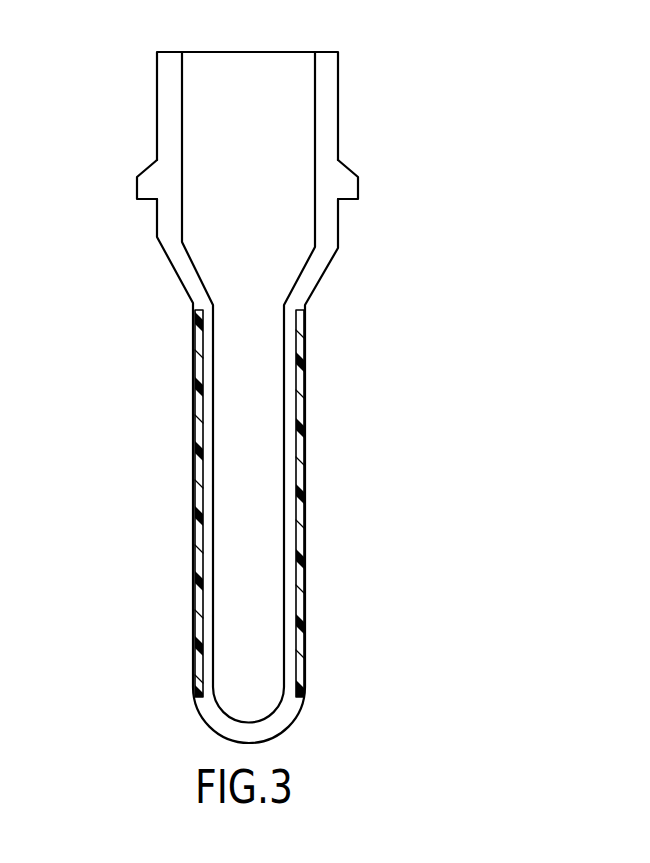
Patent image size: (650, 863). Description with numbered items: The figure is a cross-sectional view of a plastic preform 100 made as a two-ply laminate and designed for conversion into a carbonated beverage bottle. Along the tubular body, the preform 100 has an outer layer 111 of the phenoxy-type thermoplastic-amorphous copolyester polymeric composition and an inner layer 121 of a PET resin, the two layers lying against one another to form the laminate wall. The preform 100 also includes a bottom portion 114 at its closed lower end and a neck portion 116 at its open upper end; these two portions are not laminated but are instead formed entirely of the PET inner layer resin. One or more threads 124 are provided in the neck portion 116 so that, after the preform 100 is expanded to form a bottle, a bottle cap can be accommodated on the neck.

The plastic preform 100 is at (372, 82).
The threads 124 is at (353, 173).
The neck portion 116 is at (338, 233).
The inner layer 121 is at (293, 385).
The outer layer 111 is at (303, 433).
The bottom portion 114 is at (267, 742).